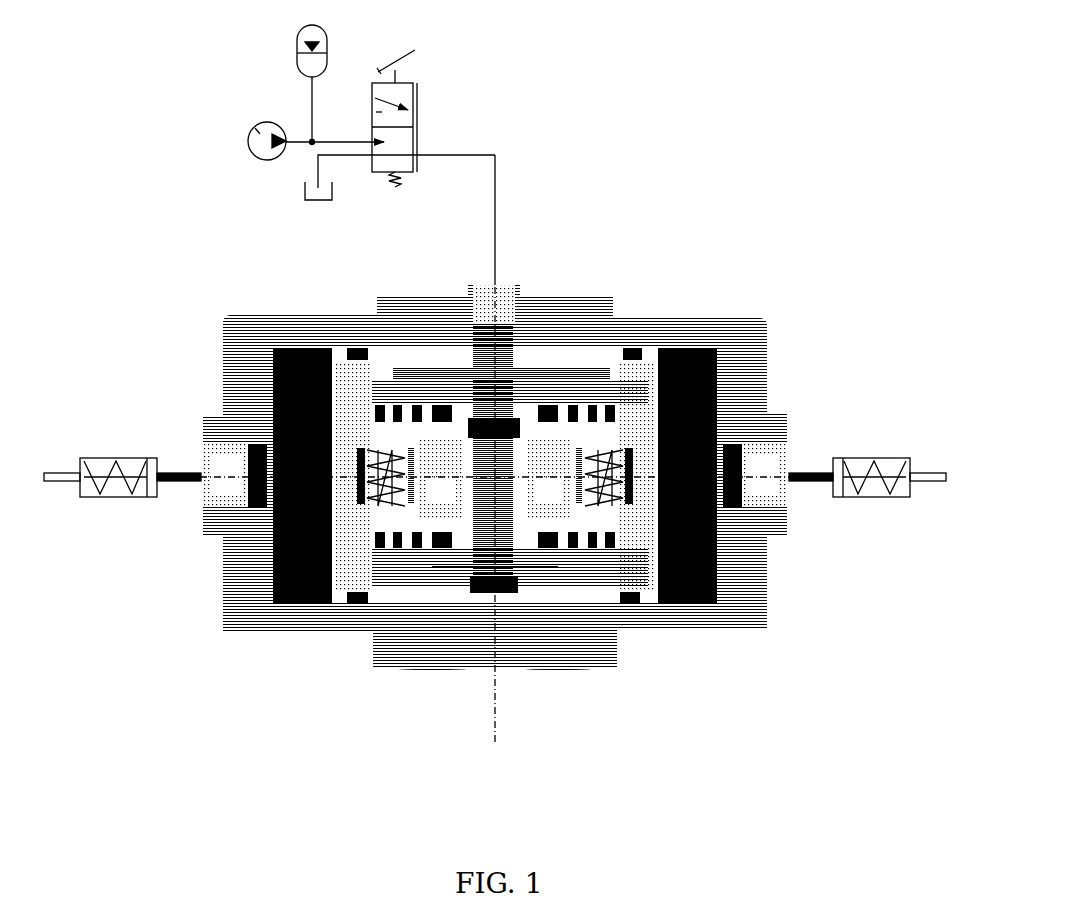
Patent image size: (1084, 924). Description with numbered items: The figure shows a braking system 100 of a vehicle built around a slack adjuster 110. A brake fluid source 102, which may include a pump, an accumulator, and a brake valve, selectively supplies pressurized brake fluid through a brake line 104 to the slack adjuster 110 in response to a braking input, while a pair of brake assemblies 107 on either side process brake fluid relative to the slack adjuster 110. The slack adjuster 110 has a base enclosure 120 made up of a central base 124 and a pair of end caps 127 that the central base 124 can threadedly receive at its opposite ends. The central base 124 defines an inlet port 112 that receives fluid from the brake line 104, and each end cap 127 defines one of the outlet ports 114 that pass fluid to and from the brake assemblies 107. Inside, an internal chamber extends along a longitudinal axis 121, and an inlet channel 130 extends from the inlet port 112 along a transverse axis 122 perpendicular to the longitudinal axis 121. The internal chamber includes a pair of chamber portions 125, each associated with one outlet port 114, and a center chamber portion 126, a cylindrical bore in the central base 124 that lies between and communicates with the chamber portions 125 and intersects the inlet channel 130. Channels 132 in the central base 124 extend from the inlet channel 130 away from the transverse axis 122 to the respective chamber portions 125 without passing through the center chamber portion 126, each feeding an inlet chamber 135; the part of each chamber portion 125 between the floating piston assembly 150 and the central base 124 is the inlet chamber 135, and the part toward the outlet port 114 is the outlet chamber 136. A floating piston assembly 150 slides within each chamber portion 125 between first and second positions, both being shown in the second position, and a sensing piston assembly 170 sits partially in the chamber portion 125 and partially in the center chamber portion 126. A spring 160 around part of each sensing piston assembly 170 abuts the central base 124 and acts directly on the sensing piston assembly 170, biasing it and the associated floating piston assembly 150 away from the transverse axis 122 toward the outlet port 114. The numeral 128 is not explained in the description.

The braking system 100 is at (745, 135).
The brake fluid source 102 is at (243, 62).
The brake line 104 is at (497, 203).
The brake assembly 107 is at (102, 440).
The slack adjuster 110 is at (498, 504).
The inlet port 112 is at (490, 285).
The outlet port 114 is at (223, 458).
The base enclosure 120 is at (627, 307).
The longitudinal axis 121 is at (233, 477).
The transverse axis 122 is at (505, 742).
The central base 124 is at (442, 665).
The chamber portion 125 is at (288, 603).
The center chamber portion 126 is at (491, 493).
The end cap 127 is at (757, 345).
The seal 128 is at (718, 366).
The inlet channel 130 is at (507, 335).
The channel 132 is at (533, 373).
The inlet chamber 135 is at (590, 380).
The outlet chamber 136 is at (277, 348).
The floating piston assembly 150 is at (340, 367).
The spring 160 is at (407, 545).
The sensing piston assembly 170 is at (390, 527).